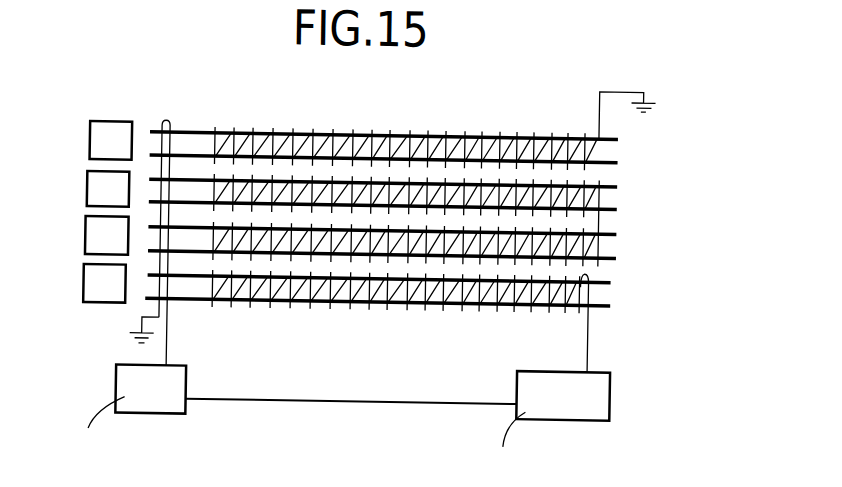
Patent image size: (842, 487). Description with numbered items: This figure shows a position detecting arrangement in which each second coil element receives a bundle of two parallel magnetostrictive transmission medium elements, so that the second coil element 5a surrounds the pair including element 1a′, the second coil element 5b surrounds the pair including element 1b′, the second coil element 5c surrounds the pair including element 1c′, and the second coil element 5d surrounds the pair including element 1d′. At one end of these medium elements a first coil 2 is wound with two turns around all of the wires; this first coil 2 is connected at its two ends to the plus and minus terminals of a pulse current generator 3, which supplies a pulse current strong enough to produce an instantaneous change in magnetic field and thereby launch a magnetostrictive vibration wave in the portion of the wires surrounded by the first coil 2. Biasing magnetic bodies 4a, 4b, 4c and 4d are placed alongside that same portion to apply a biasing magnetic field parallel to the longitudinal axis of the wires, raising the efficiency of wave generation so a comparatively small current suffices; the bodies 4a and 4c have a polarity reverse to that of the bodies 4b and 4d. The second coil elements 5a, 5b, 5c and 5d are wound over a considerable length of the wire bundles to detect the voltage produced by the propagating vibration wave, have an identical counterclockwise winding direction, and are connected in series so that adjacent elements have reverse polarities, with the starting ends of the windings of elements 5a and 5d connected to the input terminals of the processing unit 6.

The magnetostrictive transmission medium element 1a′ is at (613, 298).
The magnetostrictive transmission medium element 1b′ is at (618, 251).
The magnetostrictive transmission medium element 1c′ is at (618, 202).
The magnetostrictive transmission medium element 1d′ is at (618, 155).
The first coil 2 is at (170, 121).
The pulse current generator 3 is at (190, 390).
The biasing magnetic body 4a is at (86, 293).
The biasing magnetic body 4b is at (87, 240).
The biasing magnetic body 4c is at (88, 192).
The biasing magnetic body 4d is at (90, 143).
The second coil element 5a is at (473, 283).
The second coil element 5b is at (214, 272).
The second coil element 5c is at (225, 192).
The second coil element 5d is at (474, 141).
The processing unit 6 is at (614, 390).